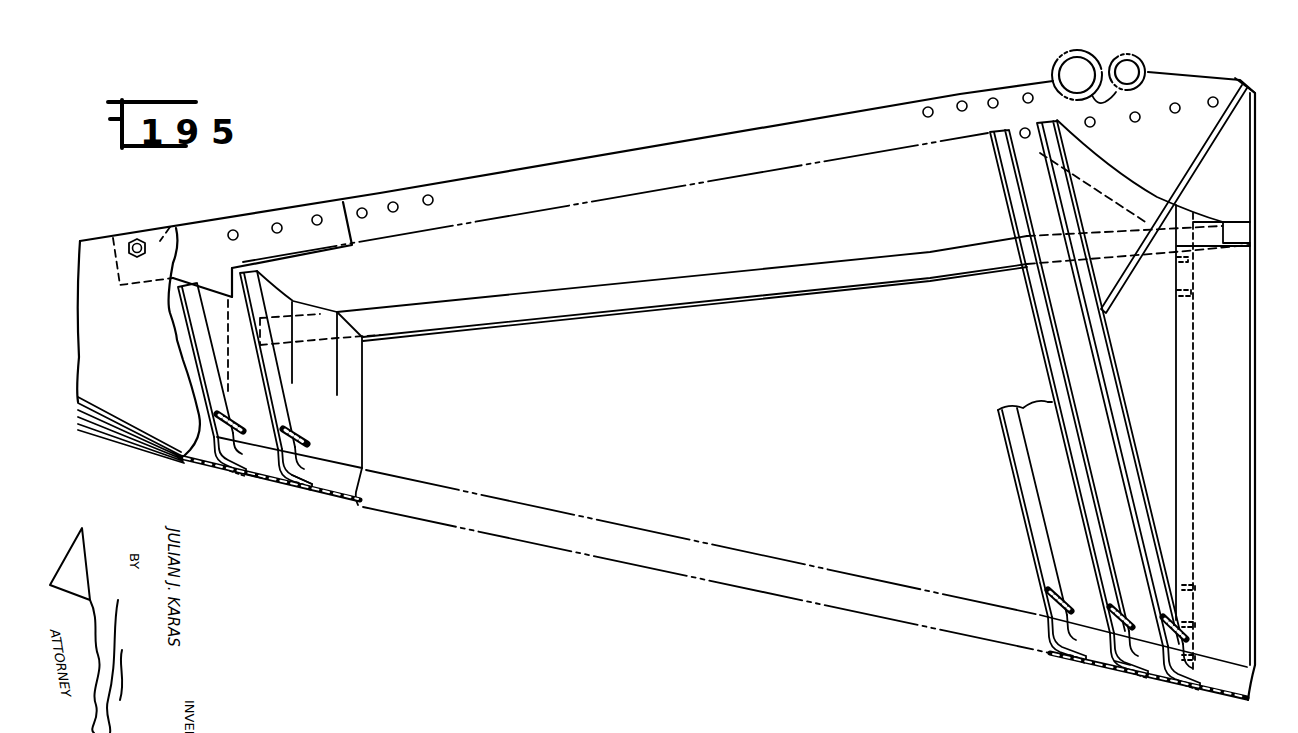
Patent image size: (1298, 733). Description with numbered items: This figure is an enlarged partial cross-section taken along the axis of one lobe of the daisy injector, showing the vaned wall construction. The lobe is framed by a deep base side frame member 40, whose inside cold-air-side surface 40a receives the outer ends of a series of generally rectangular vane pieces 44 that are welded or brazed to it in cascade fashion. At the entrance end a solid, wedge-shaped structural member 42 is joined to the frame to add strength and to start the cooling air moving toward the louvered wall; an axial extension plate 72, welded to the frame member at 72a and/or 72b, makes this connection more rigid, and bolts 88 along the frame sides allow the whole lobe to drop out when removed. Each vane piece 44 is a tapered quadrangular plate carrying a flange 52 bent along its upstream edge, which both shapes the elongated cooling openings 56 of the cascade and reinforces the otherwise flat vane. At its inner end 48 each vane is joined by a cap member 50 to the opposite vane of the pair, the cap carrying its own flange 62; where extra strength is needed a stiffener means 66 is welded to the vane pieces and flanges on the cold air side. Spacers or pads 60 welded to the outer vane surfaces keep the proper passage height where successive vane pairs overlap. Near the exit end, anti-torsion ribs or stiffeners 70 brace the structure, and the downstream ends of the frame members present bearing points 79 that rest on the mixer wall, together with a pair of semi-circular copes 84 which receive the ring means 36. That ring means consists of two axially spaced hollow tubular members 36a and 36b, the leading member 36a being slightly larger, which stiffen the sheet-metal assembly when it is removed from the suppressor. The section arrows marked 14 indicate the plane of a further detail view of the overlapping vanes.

The section line of FIG. 14 is at (1011, 362).
The ring means 36 is at (1170, 53).
The hollow tubular member 36a is at (1086, 55).
The hollow tubular member 36b is at (1138, 55).
The base side frame member 40 is at (654, 248).
The inside surface of member 40 40a is at (948, 96).
The solid structural member 42 is at (137, 362).
The vane piece 44 is at (217, 356).
The inner end of vane piece 48 is at (363, 468).
The cap member 50 is at (342, 502).
The flange 52 is at (205, 378).
The openings 56 is at (263, 500).
The air passage spacers or pads 60 is at (291, 496).
The cap flange 62 is at (290, 470).
The stiffener means 66 is at (305, 440).
The anti-torsion ribs or stiffeners 70 is at (1190, 187).
The extension plate 72 is at (166, 230).
The weld location of extension plate 72a is at (220, 296).
The weld location of extension plate 72b is at (320, 210).
The bearing points 79 is at (1196, 86).
The copes 84 is at (1107, 113).
The bolts 88 is at (140, 240).